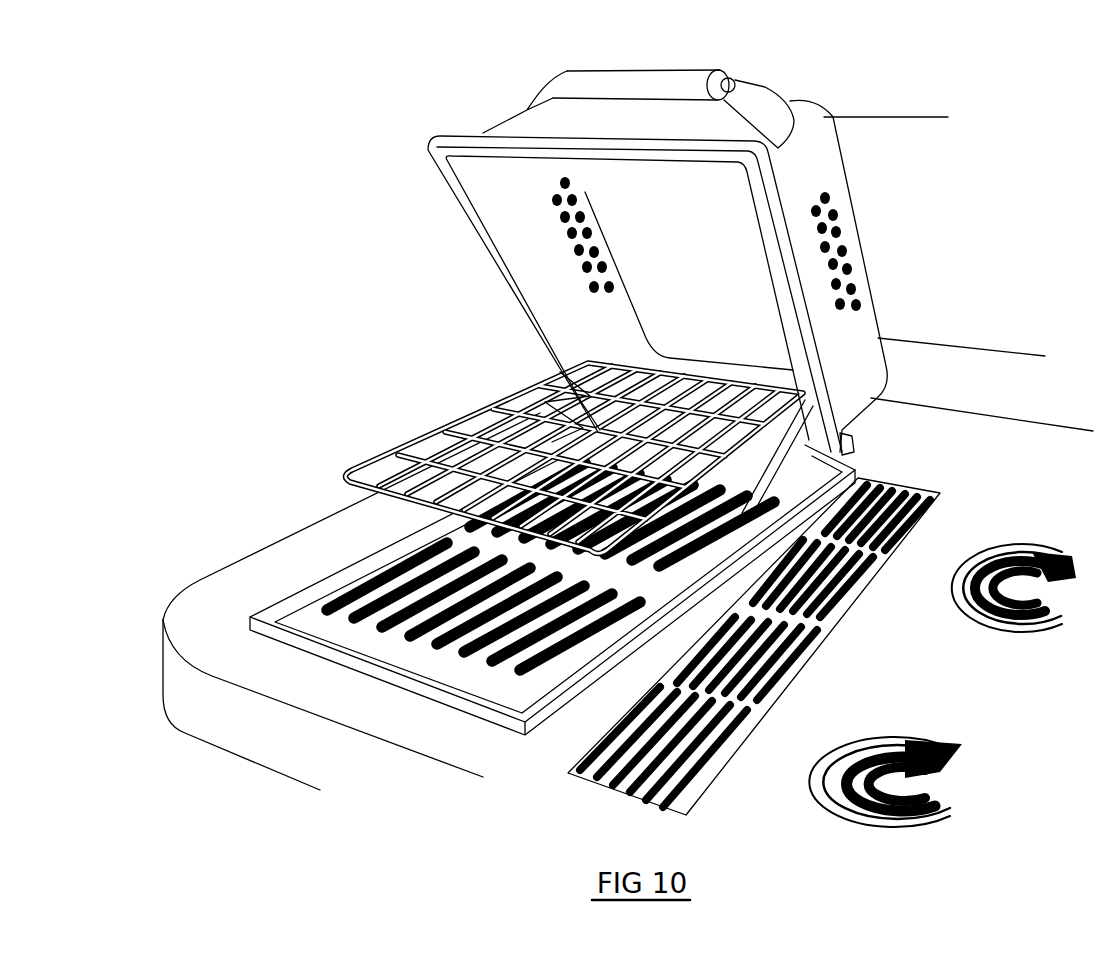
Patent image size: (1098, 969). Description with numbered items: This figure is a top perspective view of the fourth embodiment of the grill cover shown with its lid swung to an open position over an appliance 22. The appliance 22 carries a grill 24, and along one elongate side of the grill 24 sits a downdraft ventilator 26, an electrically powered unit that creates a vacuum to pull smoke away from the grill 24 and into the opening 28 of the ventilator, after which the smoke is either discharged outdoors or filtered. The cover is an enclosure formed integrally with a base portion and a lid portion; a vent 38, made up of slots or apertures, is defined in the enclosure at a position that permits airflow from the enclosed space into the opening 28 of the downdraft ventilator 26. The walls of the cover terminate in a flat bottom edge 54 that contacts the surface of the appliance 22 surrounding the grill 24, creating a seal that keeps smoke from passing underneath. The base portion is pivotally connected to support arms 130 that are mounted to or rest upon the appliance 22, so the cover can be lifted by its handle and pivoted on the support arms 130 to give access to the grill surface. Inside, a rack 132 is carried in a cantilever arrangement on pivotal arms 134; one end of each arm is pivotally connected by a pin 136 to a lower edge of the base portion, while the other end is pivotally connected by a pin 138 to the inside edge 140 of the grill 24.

The appliance 22 is at (867, 128).
The grill 24 is at (377, 617).
The downdraft ventilator 26 is at (817, 650).
The opening 28 is at (933, 493).
The vent 38 is at (835, 240).
The flat bottom edge 54 is at (437, 160).
The support arms 130 is at (854, 447).
The rack 132 is at (360, 473).
The pivotal arms 134 is at (540, 397).
The pin 136 is at (580, 370).
The pin 138 is at (527, 480).
The inside edge 140 is at (417, 533).